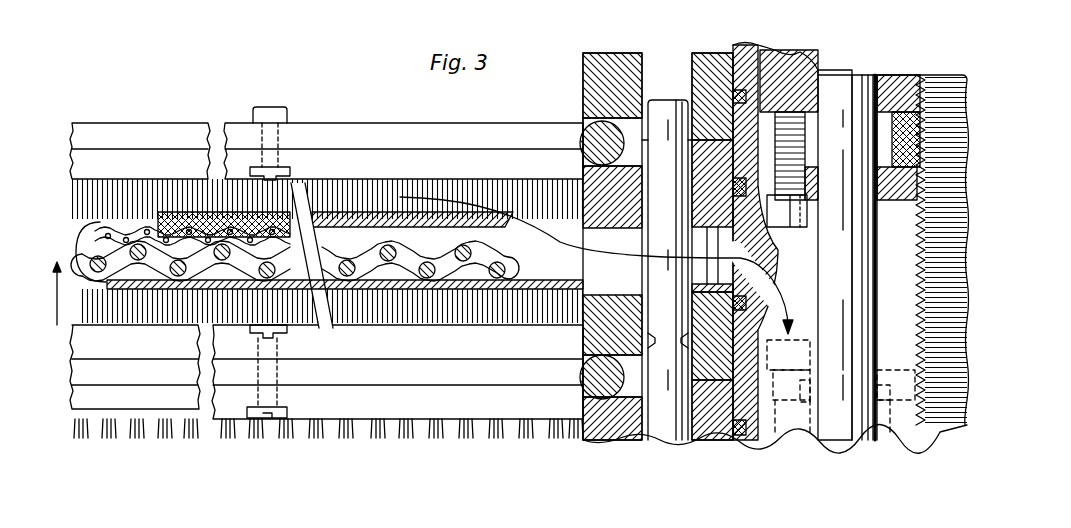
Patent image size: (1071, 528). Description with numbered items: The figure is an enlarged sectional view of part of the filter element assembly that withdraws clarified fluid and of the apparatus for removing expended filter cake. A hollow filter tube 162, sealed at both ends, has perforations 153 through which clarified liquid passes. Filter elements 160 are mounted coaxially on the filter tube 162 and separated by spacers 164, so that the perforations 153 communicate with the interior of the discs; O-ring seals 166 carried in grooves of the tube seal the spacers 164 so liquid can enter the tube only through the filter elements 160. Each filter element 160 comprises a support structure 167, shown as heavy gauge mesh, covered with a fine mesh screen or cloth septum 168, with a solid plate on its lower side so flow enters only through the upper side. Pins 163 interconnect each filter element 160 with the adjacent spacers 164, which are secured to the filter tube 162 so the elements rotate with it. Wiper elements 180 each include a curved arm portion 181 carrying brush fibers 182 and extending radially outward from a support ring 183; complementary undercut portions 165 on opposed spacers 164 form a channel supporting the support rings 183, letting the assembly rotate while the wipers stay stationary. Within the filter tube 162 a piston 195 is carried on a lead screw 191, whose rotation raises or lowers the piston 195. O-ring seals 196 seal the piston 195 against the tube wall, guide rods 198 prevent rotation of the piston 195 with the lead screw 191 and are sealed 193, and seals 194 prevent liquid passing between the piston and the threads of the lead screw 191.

The perforations 153 is at (767, 248).
The filter element 160 is at (130, 349).
The filter tube 162 is at (745, 45).
The pins 163 is at (663, 98).
The spacers 164 is at (604, 53).
The undercut portions 165 is at (586, 128).
The O-ring seals 166 is at (736, 97).
The support structure 167 is at (516, 252).
The fine mesh screen or cloth septum 168 is at (302, 306).
The wiper elements 180 is at (192, 106).
The curved arm portion 181 is at (342, 178).
The brush fibers 182 is at (367, 194).
The support ring 183 is at (582, 141).
The lead screw 191 is at (912, 286).
The seals 193 is at (884, 165).
The seals 194 is at (905, 118).
The piston 195 is at (762, 160).
The O-ring seals 196 is at (786, 58).
The guide rods 198 is at (878, 257).